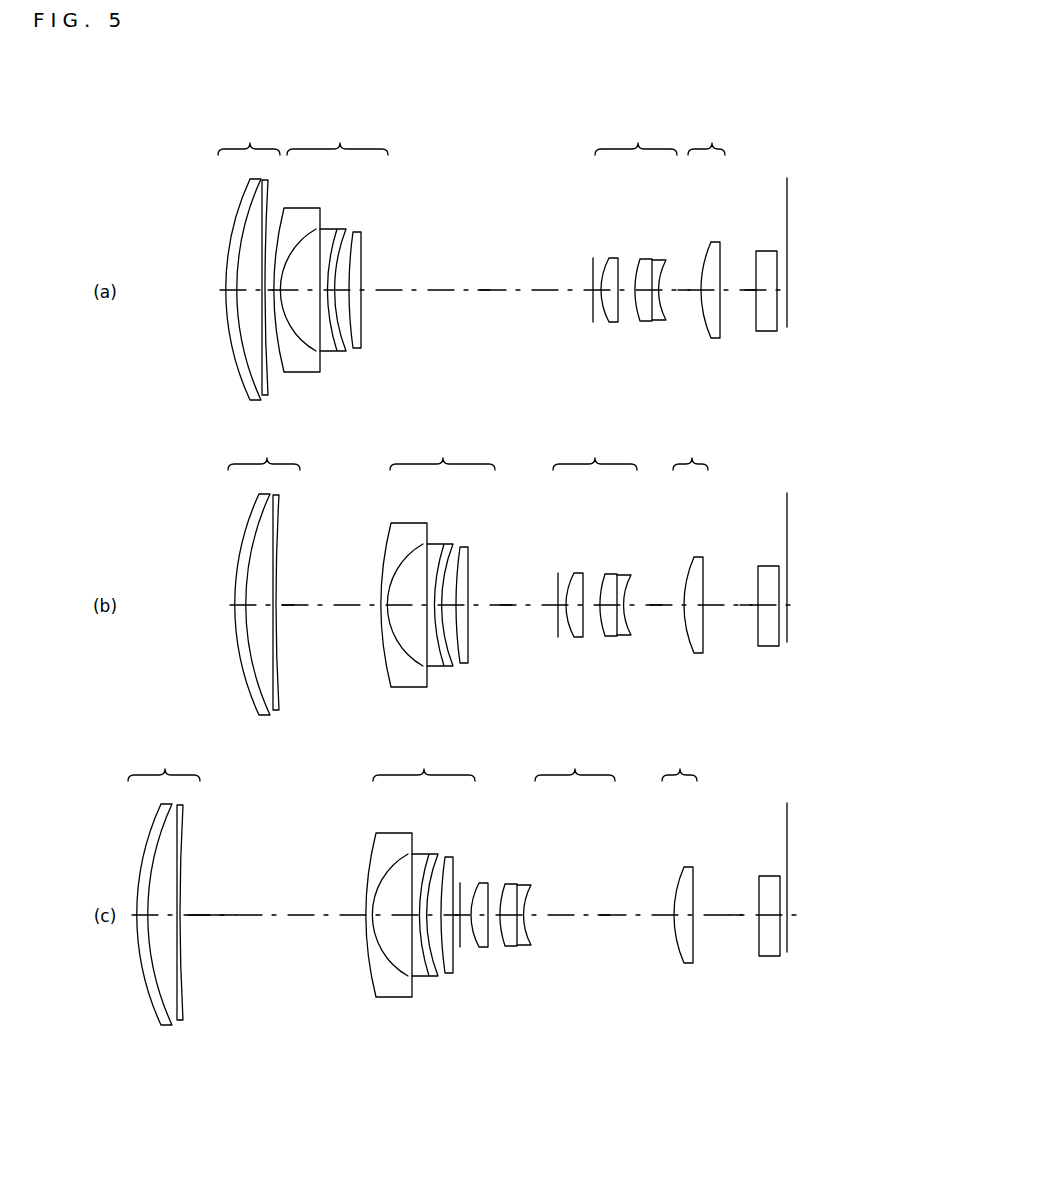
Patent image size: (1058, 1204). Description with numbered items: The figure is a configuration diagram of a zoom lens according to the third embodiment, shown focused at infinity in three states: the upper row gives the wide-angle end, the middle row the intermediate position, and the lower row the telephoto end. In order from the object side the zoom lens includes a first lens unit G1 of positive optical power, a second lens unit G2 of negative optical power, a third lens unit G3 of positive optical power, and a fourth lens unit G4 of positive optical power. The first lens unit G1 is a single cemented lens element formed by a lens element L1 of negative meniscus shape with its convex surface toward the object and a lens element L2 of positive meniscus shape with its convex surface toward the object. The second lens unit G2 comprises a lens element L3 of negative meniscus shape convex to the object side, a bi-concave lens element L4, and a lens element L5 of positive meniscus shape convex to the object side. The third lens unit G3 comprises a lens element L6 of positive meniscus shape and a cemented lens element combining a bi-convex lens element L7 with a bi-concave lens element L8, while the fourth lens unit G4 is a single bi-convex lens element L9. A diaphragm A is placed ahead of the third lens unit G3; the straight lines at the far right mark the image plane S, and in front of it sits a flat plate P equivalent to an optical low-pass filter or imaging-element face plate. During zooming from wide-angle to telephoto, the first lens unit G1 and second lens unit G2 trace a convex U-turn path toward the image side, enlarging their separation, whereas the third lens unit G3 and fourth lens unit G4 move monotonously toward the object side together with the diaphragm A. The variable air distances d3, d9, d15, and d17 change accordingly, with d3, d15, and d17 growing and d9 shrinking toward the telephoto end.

The lens element L1 is at (203, 594).
The lens element L2 is at (240, 591).
The lens element L3 is at (350, 580).
The lens element L4 is at (395, 569).
The lens element L5 is at (423, 568).
The lens element L6 is at (547, 555).
The lens element L7 is at (576, 554).
The lens element L8 is at (602, 554).
The lens element L9 is at (697, 563).
The first lens unit G1 is at (214, 446).
The second lens unit G2 is at (391, 446).
The third lens unit G3 is at (606, 446).
The fourth lens unit G4 is at (693, 446).
The diaphragm A is at (526, 555).
The flat plate P is at (762, 533).
The image plane S is at (788, 531).
The distance between surfaces d3 is at (274, 345).
The distance between surfaces d9 is at (484, 291).
The distance between surfaces d15 is at (684, 291).
The distance between surfaces d17 is at (752, 291).